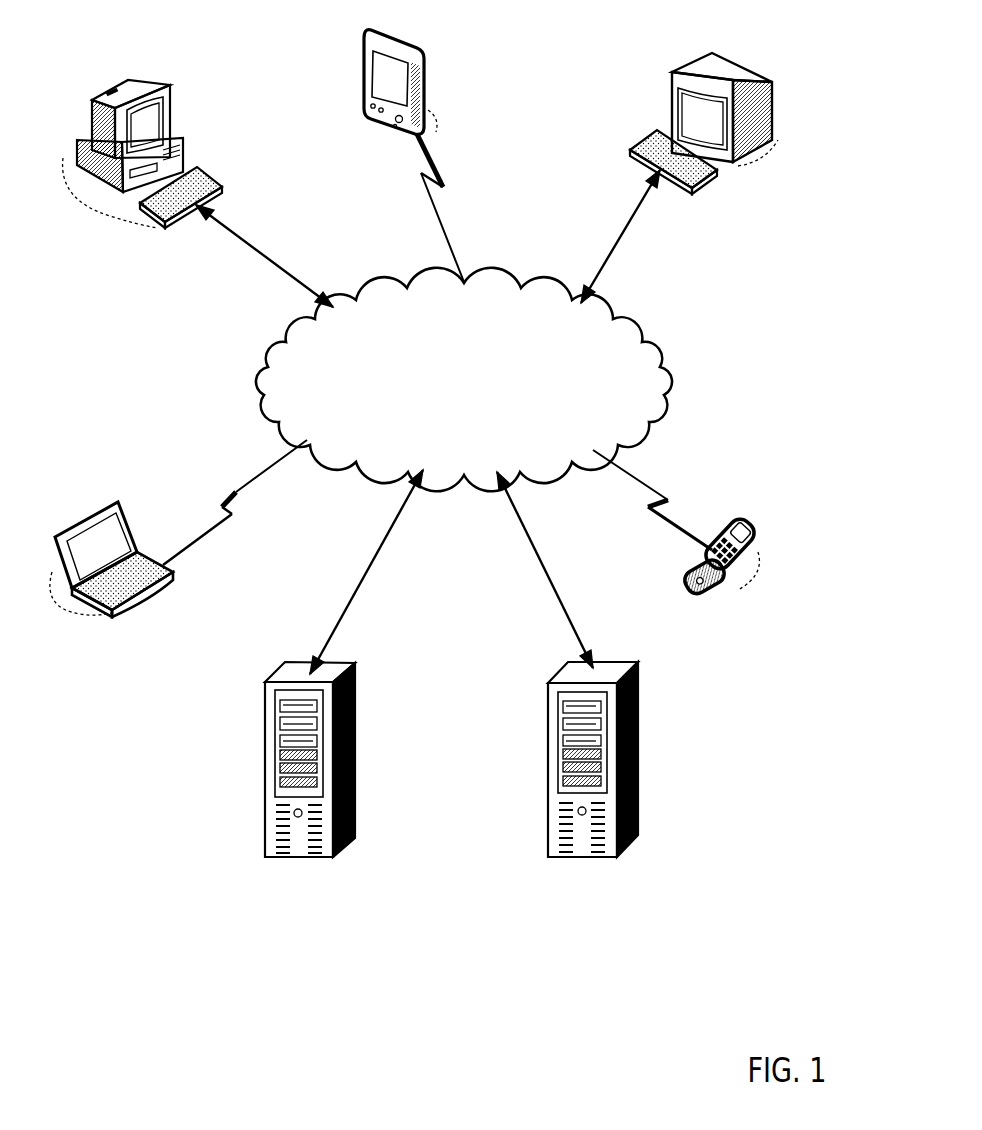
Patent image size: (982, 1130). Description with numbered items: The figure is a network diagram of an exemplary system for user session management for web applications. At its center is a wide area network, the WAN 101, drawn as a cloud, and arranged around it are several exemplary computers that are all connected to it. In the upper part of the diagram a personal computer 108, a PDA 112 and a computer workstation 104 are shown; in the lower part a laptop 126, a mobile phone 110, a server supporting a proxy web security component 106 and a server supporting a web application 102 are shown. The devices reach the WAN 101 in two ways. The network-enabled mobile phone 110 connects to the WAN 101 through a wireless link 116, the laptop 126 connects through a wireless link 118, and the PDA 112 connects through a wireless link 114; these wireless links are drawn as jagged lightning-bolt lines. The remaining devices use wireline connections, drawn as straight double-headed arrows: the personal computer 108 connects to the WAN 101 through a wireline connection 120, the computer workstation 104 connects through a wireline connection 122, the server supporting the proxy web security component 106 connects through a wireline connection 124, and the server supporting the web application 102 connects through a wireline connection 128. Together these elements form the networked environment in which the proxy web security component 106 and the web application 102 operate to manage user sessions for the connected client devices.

The wide area network 101 is at (507, 391).
The web application 102 is at (572, 916).
The computer workstation 104 is at (738, 240).
The proxy web security component 106 is at (368, 918).
The personal computer 108 is at (147, 66).
The mobile phone 110 is at (805, 588).
The PDA 112 is at (458, 95).
The wireless link 114 is at (483, 193).
The wireless link 116 is at (610, 528).
The wireless link 118 is at (163, 510).
The wireline connection 120 is at (262, 240).
The wireline connection 122 is at (580, 238).
The wireline connection 124 is at (336, 561).
The laptop 126 is at (165, 676).
The wireline connection 128 is at (535, 606).